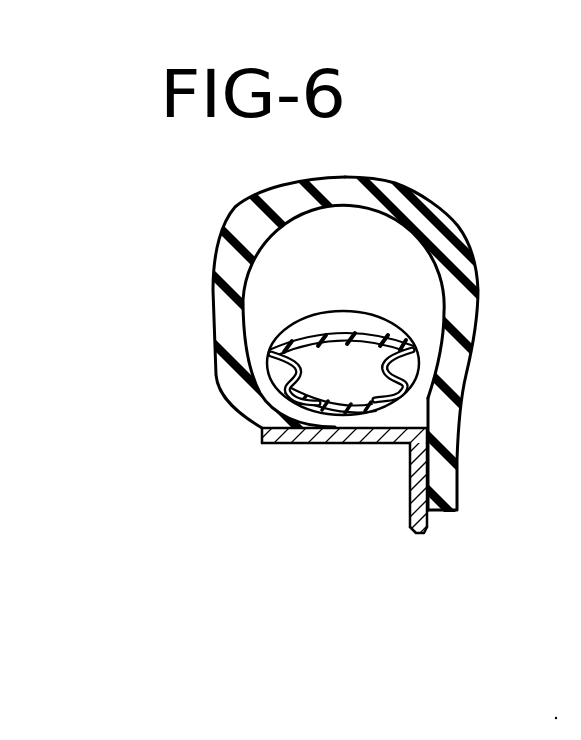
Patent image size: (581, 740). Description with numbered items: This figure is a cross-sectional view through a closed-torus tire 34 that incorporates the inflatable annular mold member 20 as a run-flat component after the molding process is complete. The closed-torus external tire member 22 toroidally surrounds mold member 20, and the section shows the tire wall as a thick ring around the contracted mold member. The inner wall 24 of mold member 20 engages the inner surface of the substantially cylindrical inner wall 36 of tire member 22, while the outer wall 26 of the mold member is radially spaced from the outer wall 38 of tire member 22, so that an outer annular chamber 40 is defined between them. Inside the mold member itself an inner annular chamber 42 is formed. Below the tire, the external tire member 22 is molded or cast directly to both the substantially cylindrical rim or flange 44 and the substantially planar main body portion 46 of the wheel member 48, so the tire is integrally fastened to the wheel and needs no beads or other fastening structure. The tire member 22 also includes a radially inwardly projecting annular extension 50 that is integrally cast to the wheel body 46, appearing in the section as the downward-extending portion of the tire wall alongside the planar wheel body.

The inflatable annular member 20 is at (281, 290).
The external tire member 22 is at (396, 168).
The inner wall 24 is at (282, 398).
The outer wall 26 is at (395, 330).
The closed-torus tire 34 is at (188, 218).
The inner wall 36 is at (311, 418).
The outer wall 38 is at (290, 200).
The outer annular chamber 40 is at (403, 250).
The inner annular chamber 42 is at (382, 355).
The rim or flange 44 is at (332, 445).
The main body portion 46 is at (417, 473).
The wheel member 48 is at (427, 549).
The annular extension 50 is at (443, 482).